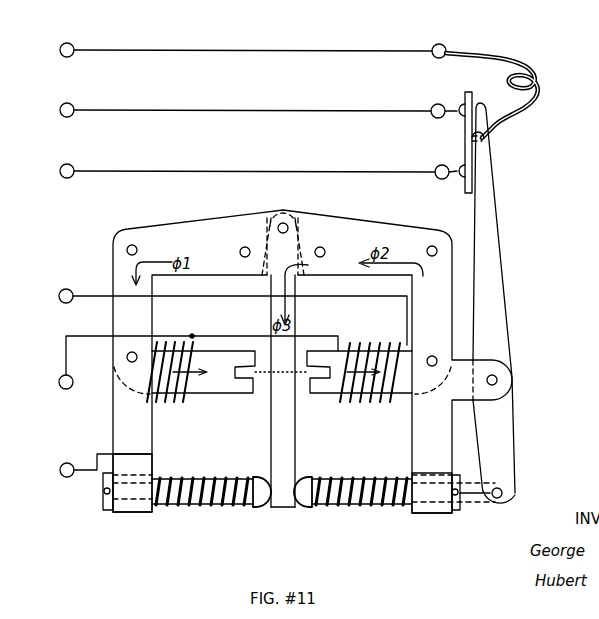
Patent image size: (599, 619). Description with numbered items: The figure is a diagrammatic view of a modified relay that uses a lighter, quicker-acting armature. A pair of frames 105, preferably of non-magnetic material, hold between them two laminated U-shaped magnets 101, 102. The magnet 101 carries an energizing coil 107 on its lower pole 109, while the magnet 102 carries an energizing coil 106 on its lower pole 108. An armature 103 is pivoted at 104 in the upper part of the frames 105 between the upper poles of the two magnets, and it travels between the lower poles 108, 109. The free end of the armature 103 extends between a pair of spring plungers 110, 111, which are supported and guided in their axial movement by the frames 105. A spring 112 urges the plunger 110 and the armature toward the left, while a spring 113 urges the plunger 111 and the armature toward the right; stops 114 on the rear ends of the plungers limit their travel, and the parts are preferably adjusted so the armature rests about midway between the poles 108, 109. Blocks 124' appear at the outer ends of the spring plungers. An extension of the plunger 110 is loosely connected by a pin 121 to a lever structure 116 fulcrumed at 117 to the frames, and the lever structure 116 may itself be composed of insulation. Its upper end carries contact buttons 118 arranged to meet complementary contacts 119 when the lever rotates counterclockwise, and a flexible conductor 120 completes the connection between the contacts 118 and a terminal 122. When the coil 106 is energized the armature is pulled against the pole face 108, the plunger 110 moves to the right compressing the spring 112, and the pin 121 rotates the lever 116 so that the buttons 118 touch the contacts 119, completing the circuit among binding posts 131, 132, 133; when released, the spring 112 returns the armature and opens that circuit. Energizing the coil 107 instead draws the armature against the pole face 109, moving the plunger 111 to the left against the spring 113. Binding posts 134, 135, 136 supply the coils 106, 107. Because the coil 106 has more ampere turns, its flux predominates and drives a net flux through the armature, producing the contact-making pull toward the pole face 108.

The laminated U-shaped magnet 101 is at (187, 229).
The laminated U-shaped magnet 102 is at (355, 226).
The armature 103 is at (292, 452).
The pivot 104 is at (288, 224).
The frames 105 is at (262, 213).
The energizing coil 106 is at (383, 403).
The energizing coil 107 is at (192, 398).
The lower pole 108 is at (327, 393).
The lower pole 109 is at (250, 397).
The spring plunger 110 is at (304, 508).
The spring plunger 111 is at (262, 507).
The spring 112 is at (384, 506).
The spring 113 is at (206, 505).
The stops 114 is at (103, 508).
The lever structure 116 is at (502, 331).
The fulcrum pin 117 is at (500, 381).
The contact buttons 118 is at (463, 119).
The complementary contacts 119 is at (422, 136).
The flexible conductor 120 is at (538, 93).
The pin 121 is at (504, 496).
The terminal 122 is at (419, 41).
The spring abutment block 124' is at (296, 499).
The binding post 131 is at (225, 48).
The binding post 132 is at (224, 113).
The binding post 133 is at (226, 171).
The binding post 134 is at (214, 315).
The binding post 135 is at (179, 363).
The binding post 136 is at (89, 468).